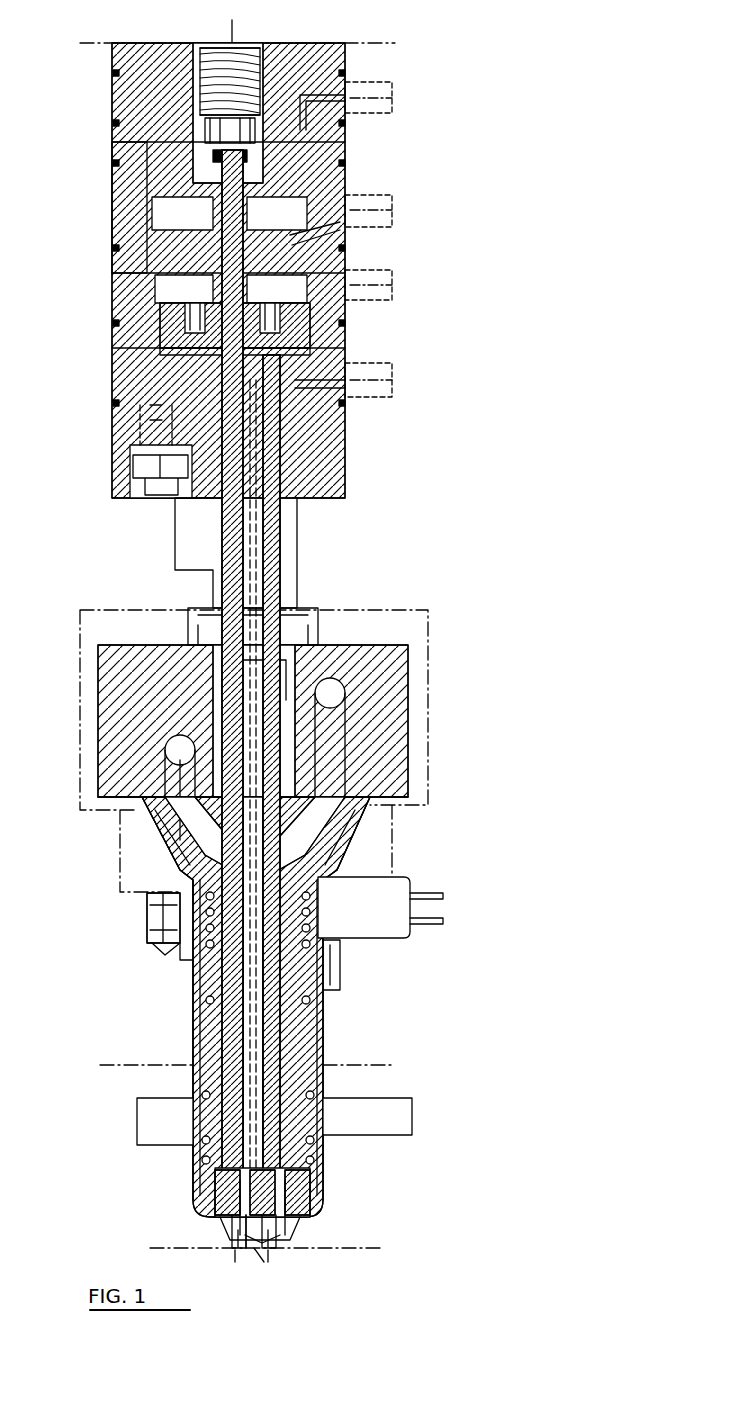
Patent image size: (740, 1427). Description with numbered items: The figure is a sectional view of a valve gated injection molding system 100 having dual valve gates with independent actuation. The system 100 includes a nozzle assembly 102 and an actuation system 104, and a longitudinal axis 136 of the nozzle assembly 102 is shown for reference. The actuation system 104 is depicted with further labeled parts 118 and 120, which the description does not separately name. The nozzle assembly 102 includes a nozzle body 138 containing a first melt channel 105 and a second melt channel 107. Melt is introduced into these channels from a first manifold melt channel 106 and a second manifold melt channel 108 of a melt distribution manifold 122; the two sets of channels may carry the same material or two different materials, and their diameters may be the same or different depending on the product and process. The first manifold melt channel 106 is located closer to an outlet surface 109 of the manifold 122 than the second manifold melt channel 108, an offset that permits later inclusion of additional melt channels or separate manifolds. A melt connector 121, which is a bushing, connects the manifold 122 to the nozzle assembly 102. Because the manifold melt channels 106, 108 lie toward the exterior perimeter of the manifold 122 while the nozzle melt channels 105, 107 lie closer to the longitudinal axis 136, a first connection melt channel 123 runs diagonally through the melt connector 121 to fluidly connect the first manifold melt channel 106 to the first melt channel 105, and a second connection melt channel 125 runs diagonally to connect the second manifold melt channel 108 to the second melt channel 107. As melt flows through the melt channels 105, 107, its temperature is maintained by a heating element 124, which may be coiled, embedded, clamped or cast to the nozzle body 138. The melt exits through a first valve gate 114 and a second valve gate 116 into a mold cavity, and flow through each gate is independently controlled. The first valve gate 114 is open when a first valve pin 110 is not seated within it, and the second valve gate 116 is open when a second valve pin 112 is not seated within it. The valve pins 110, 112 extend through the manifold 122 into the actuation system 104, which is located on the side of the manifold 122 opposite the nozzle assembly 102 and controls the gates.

The valve gated injection molding system 100 is at (505, 545).
The nozzle assembly 102 is at (528, 1247).
The actuation system 104 is at (300, 22).
The first melt channel 105 is at (197, 1042).
The first manifold melt channel 106 is at (162, 783).
The second melt channel 107 is at (283, 1010).
The second manifold melt channel 108 is at (345, 745).
The outlet surface 109 is at (408, 792).
The first valve pin 110 is at (212, 1190).
The second valve pin 112 is at (300, 1178).
The first valve gate 114 is at (235, 1240).
The second valve gate 116 is at (290, 1240).
The actuator housing 118 is at (128, 205).
The actuator piston 120 is at (335, 335).
The melt connector 121 is at (345, 822).
The melt distribution manifold 122 is at (408, 675).
The first connection melt channel 123 is at (175, 828).
The heating element 124 is at (137, 1120).
The second connection melt channel 125 is at (345, 850).
The longitudinal axis 136 is at (264, 1262).
The nozzle body 138 is at (323, 1040).